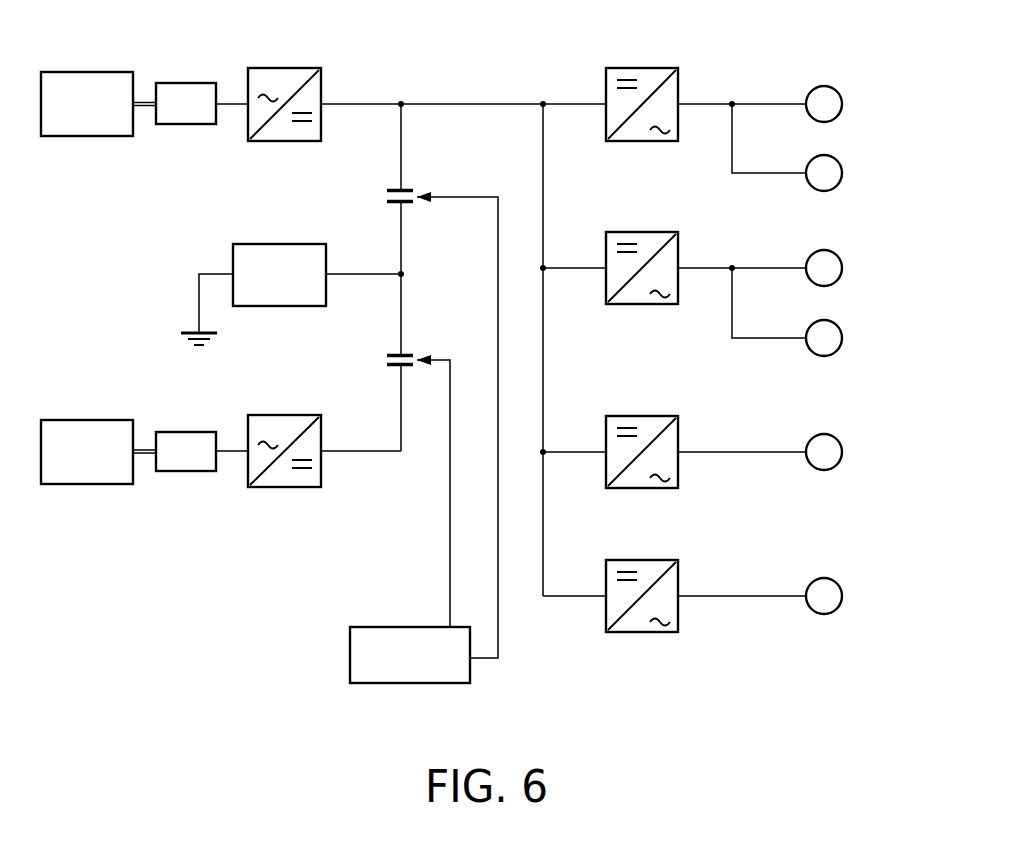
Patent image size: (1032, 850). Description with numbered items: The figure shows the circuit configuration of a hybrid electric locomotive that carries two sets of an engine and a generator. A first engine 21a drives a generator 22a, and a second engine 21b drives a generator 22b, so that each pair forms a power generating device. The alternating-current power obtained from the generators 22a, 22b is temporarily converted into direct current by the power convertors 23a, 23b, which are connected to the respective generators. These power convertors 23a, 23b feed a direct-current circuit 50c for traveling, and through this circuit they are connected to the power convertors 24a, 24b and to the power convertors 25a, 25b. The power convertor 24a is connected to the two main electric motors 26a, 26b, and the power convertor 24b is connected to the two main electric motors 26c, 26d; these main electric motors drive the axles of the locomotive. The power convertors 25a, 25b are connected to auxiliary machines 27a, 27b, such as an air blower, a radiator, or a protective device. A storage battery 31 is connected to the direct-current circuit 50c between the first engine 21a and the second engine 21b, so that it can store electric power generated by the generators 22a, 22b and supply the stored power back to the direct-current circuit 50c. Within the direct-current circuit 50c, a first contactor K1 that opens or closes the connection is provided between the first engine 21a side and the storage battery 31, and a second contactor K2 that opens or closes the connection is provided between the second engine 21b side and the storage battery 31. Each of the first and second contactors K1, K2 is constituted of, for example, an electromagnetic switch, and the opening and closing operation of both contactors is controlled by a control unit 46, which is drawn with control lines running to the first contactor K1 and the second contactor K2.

The first engine 21a is at (92, 72).
The second engine 21b is at (92, 420).
The generator 22a is at (188, 83).
The generator 22b is at (188, 432).
The power convertor 23a is at (288, 68).
The power convertor 23b is at (288, 415).
The power convertor 24a is at (644, 68).
The power convertor 24b is at (644, 232).
The power convertor 25a is at (644, 416).
The power convertor 25b is at (644, 560).
The main electric motor 26a is at (829, 88).
The main electric motor 26b is at (829, 157).
The main electric motor 26c is at (829, 252).
The main electric motor 26d is at (829, 322).
The auxiliary machine 27a is at (829, 436).
The auxiliary machine 27b is at (829, 580).
The storage battery 31 is at (280, 244).
The control unit 46 is at (350, 657).
The direct-current circuit 50c is at (402, 146).
The first contactor K1 is at (387, 197).
The second contactor K2 is at (387, 361).